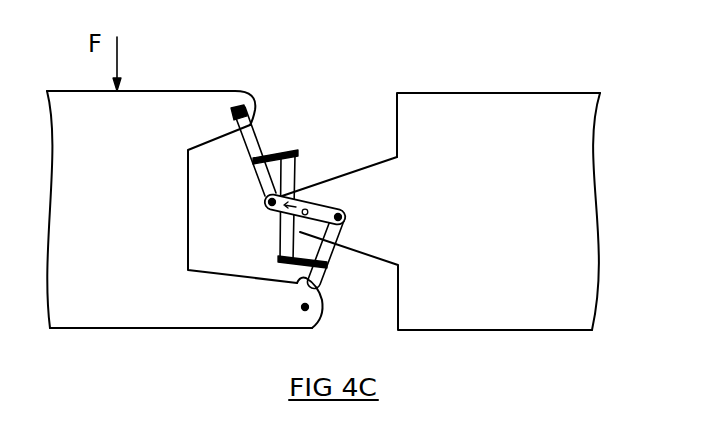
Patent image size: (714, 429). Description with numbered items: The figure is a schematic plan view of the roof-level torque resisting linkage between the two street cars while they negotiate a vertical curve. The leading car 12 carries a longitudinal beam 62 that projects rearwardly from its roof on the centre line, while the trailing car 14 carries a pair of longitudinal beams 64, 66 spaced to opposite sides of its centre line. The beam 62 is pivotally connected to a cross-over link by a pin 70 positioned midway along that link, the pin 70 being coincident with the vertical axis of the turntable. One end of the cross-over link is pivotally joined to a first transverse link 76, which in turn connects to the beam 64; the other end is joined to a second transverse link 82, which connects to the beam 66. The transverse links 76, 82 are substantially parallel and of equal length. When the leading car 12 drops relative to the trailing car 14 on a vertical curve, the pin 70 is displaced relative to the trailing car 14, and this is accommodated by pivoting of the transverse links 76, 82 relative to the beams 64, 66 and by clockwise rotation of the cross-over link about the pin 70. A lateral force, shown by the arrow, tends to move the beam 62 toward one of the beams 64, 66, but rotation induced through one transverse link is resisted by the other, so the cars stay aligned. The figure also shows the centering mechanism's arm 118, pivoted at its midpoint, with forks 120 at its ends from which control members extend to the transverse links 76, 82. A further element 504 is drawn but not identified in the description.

The leading car 12 is at (450, 211).
The trailing car 14 is at (179, 209).
The longitudinal beam 62 is at (352, 187).
The longitudinal beam 64 is at (218, 120).
The longitudinal beam 66 is at (284, 323).
The pin 70 is at (350, 206).
The first transverse link 76 is at (256, 181).
The second transverse link 82 is at (324, 280).
The arm 118 is at (278, 243).
The forks 120 is at (280, 148).
The pivot pin 504 is at (298, 331).